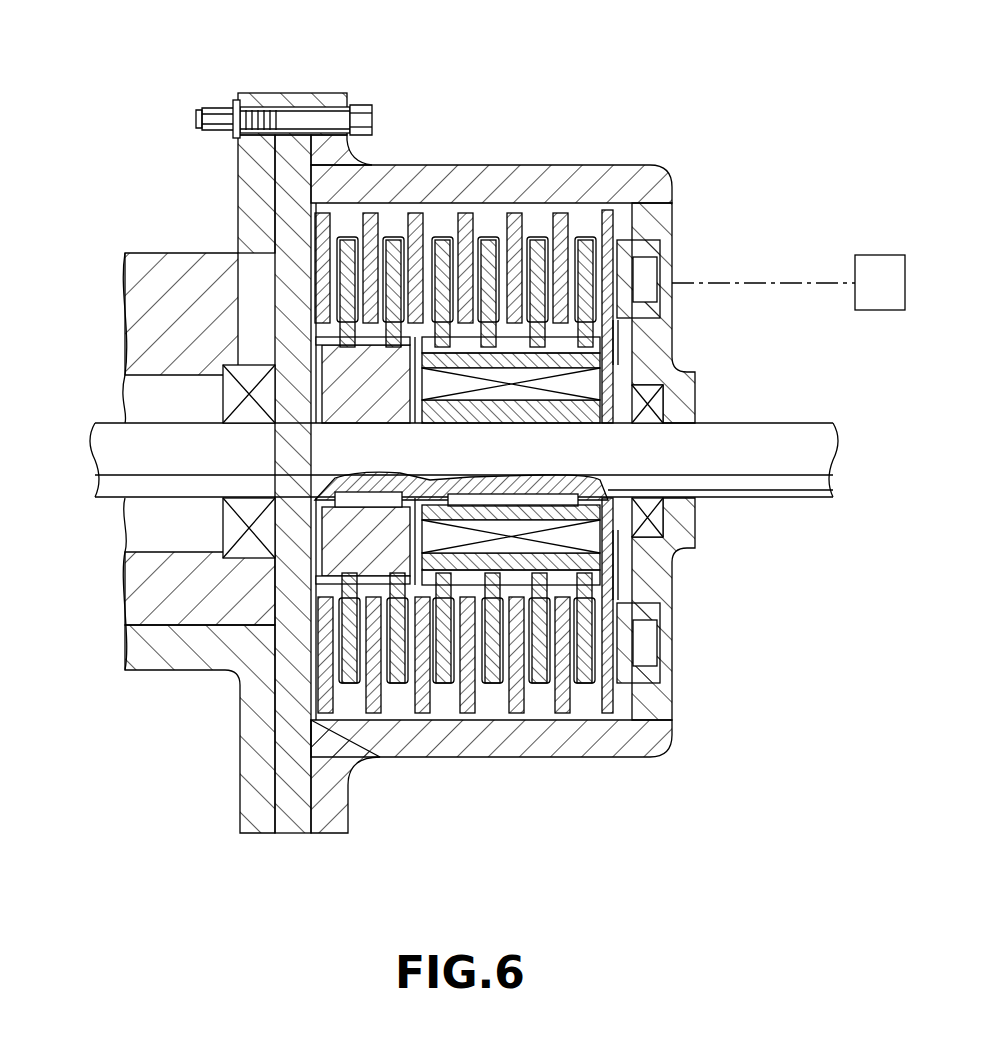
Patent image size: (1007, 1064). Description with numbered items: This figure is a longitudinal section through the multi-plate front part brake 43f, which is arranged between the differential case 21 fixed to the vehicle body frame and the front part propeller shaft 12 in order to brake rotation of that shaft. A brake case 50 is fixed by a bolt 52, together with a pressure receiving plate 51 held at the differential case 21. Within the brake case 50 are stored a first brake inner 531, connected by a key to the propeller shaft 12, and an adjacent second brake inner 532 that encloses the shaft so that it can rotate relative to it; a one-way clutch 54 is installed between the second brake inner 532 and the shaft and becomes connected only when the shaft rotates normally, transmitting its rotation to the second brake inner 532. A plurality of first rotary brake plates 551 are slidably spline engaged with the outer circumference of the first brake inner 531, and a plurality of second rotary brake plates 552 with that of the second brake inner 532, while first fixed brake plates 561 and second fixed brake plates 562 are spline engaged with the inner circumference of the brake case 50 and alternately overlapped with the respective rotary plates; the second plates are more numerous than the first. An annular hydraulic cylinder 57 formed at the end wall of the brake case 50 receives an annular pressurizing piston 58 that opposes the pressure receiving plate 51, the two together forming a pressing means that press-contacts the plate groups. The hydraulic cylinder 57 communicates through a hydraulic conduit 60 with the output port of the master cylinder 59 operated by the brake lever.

The front part propeller shaft 12 is at (796, 430).
The differential case 21 is at (132, 262).
The front part brake 43f is at (512, 424).
The brake case 50 is at (463, 165).
The pressure receiving plate 51 is at (288, 176).
The bolt 52 is at (364, 118).
The first brake inner 531 is at (355, 403).
The second brake inner 532 is at (588, 366).
The one-way clutch 54 is at (574, 386).
The first rotary brake plates 551 is at (443, 280).
The second rotary brake plates 552 is at (588, 272).
The first fixed brake plates 561 is at (416, 213).
The second fixed brake plates 562 is at (560, 213).
The annular hydraulic cylinder 57 is at (652, 660).
The annular pressurizing piston 58 is at (668, 602).
The master cylinder 59 is at (878, 255).
The hydraulic conduit 60 is at (745, 283).